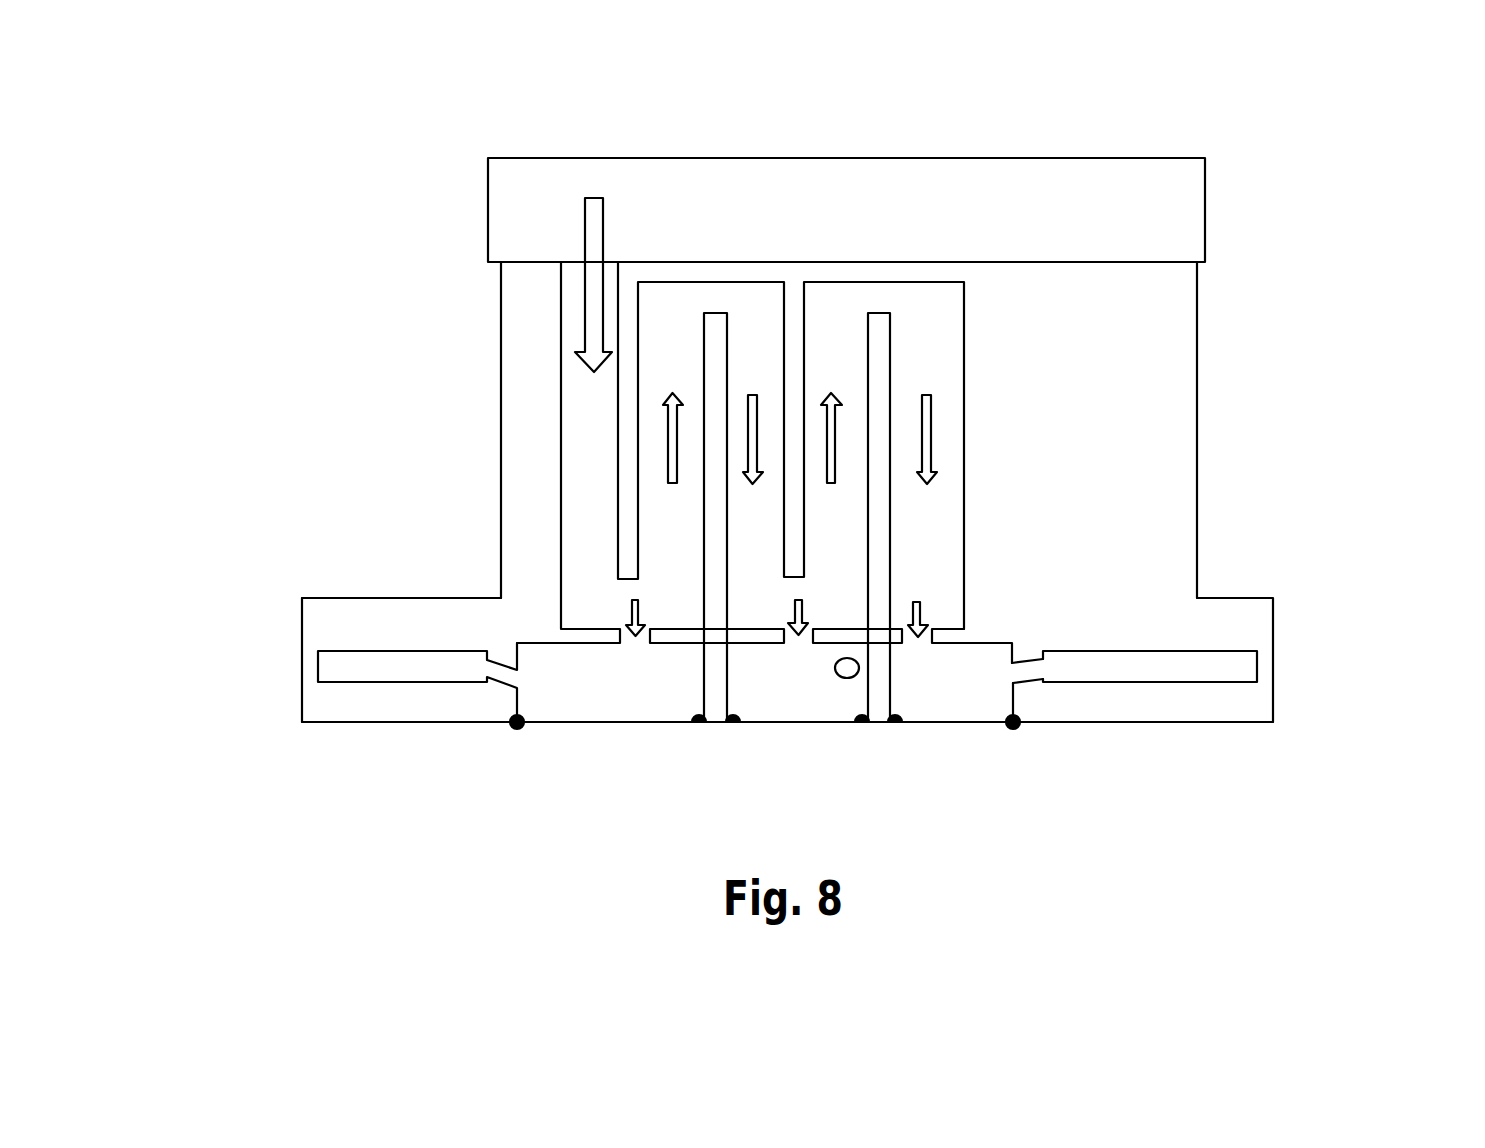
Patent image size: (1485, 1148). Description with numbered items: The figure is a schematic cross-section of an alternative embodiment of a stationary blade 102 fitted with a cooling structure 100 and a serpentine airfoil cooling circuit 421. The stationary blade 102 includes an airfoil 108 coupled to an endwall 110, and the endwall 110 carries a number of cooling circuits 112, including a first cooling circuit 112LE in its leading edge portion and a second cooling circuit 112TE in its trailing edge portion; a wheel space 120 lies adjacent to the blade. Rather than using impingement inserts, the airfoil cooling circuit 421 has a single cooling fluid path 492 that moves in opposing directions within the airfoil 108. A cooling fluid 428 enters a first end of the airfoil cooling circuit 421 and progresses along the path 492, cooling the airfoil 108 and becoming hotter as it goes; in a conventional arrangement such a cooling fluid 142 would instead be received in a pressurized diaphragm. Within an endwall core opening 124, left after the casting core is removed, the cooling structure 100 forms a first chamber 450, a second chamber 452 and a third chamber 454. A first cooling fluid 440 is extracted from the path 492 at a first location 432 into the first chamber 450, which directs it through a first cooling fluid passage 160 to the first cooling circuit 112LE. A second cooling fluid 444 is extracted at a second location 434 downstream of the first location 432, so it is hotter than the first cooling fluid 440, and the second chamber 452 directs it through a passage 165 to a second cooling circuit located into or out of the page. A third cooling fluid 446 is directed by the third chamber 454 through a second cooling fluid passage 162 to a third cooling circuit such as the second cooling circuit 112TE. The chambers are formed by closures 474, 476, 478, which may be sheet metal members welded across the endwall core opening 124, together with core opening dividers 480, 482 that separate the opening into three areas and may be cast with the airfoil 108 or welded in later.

The cooling structure 100 is at (432, 588).
The stationary blade 102 is at (470, 157).
The airfoil 108 is at (1155, 362).
The endwall 110 is at (325, 619).
The cooling circuits 112 is at (782, 682).
The first cooling circuit 112LE is at (333, 663).
The second cooling circuit 112TE is at (1228, 665).
The wheel space 120 is at (540, 820).
The endwall core opening 124 is at (1022, 695).
The cooling fluid 142 is at (1139, 231).
The first cooling fluid passage 160 is at (502, 673).
The second cooling fluid passage 162 is at (1033, 668).
The passage 165 is at (853, 667).
The airfoil cooling circuit 421 is at (547, 382).
The cooling fluid 428 is at (595, 235).
The first location 432 is at (650, 645).
The second location 434 is at (813, 645).
The first cooling fluid 440 is at (630, 607).
The second cooling fluid 444 is at (800, 612).
The third cooling fluid 446 is at (915, 607).
The first chamber 450 is at (678, 707).
The second chamber 452 is at (847, 702).
The third chamber 454 is at (967, 705).
The closure 474 is at (697, 723).
The closure 476 is at (830, 723).
The closure 478 is at (933, 723).
The core opening divider 480 is at (718, 702).
The core opening divider 482 is at (880, 703).
The cooling fluid path 492 is at (577, 448).